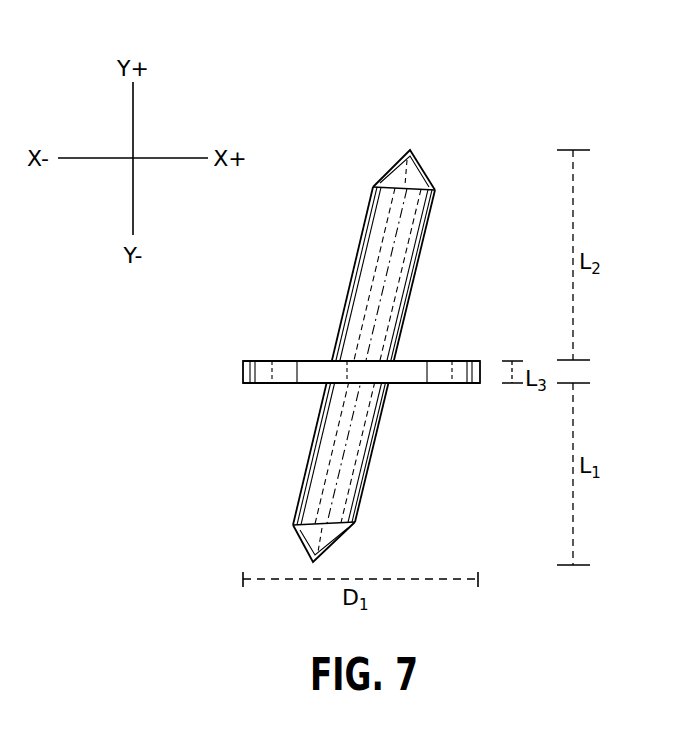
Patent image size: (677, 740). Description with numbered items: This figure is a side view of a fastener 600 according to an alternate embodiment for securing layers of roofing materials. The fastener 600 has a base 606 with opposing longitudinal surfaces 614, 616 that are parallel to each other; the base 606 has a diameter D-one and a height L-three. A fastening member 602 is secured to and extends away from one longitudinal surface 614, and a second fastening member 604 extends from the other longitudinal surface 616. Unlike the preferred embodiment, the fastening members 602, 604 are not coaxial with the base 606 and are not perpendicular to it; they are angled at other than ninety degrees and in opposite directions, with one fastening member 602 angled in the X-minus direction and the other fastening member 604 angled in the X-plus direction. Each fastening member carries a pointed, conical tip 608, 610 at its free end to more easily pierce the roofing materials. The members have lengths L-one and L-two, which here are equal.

The fastener 600 is at (472, 158).
The fastening member 602 is at (383, 433).
The fastening member 604 is at (355, 232).
The base 606 is at (482, 380).
The tip 608 is at (300, 548).
The tip 610 is at (400, 150).
The longitudinal surface 614 is at (253, 383).
The longitudinal surface 616 is at (270, 361).